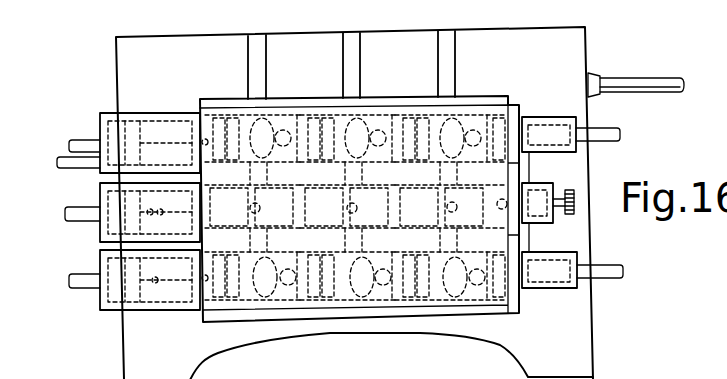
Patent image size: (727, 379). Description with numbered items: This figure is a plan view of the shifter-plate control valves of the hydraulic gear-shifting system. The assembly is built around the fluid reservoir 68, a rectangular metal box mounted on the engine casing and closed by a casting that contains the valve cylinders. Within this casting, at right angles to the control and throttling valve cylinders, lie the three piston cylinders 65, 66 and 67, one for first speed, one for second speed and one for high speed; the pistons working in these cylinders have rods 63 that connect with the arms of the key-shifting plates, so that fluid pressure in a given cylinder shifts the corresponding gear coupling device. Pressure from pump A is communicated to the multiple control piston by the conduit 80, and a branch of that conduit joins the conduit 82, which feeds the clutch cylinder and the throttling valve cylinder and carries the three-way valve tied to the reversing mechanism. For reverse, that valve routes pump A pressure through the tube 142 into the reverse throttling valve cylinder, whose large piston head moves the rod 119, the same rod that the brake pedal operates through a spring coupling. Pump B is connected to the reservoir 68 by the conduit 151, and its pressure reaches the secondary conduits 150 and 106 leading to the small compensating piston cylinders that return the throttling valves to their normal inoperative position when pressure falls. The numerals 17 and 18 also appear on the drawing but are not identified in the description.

The piston rod 17 is at (63, 252).
The base 18 is at (453, 378).
The rods 63 is at (343, 61).
The cylinder 65 is at (428, 104).
The cylinder 66 is at (350, 106).
The cylinder 67 is at (240, 108).
The fluid reservoir 68 is at (577, 325).
The conduit 80 is at (86, 220).
The conduit 82 is at (86, 291).
The secondary conduit 106 is at (614, 255).
The rod 119 is at (80, 142).
The tube 142 is at (89, 167).
The secondary conduit 150 is at (609, 141).
The conduit 151 is at (658, 74).